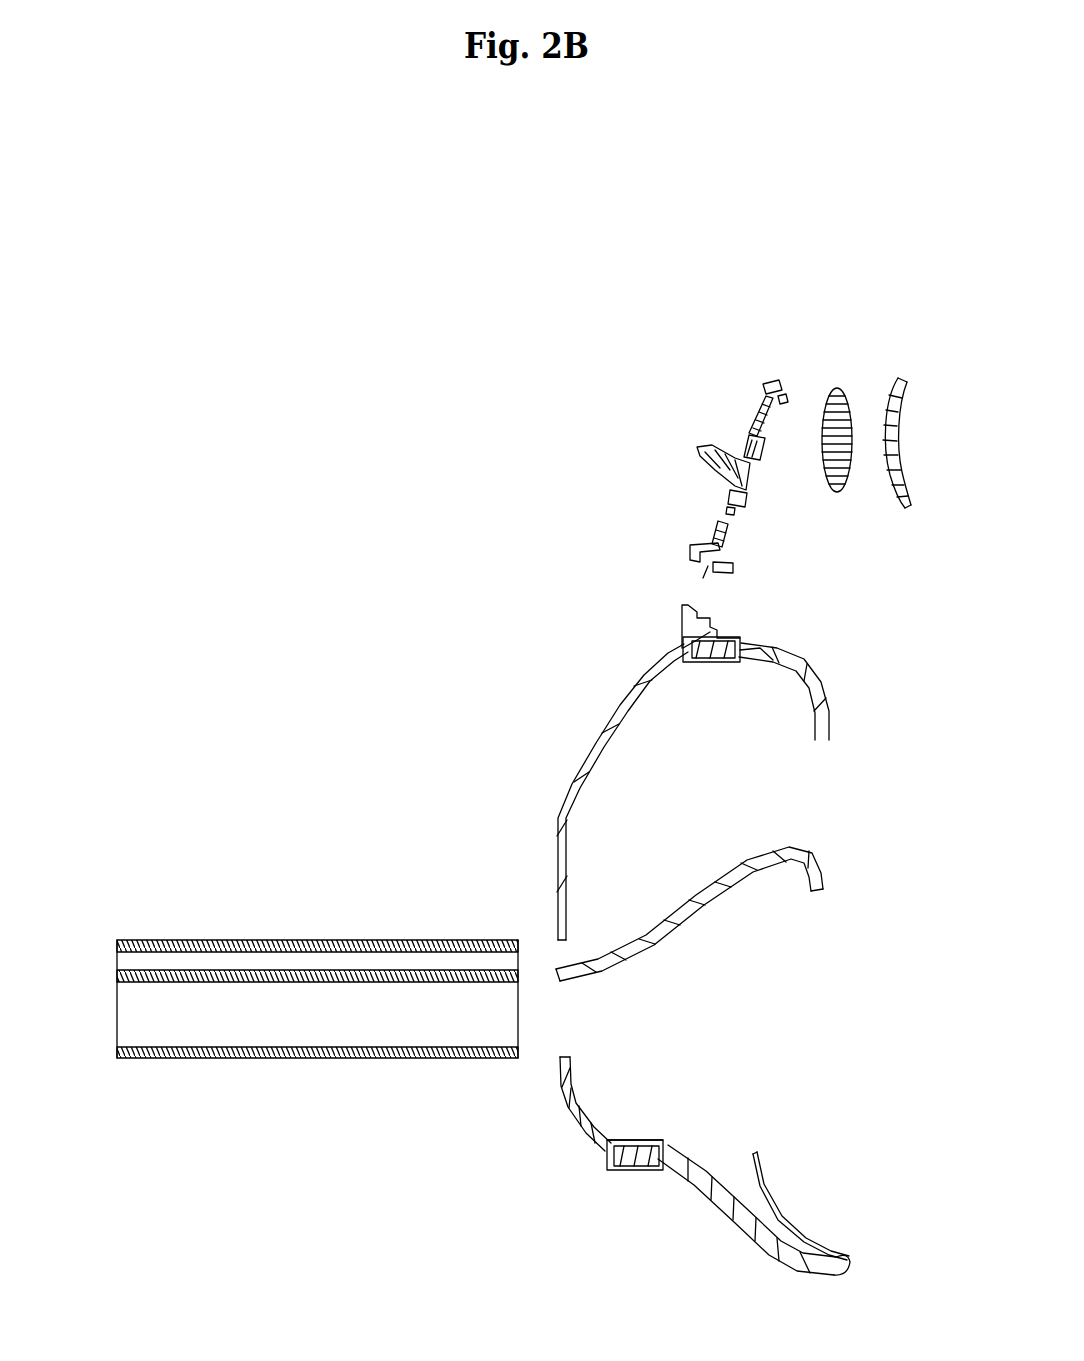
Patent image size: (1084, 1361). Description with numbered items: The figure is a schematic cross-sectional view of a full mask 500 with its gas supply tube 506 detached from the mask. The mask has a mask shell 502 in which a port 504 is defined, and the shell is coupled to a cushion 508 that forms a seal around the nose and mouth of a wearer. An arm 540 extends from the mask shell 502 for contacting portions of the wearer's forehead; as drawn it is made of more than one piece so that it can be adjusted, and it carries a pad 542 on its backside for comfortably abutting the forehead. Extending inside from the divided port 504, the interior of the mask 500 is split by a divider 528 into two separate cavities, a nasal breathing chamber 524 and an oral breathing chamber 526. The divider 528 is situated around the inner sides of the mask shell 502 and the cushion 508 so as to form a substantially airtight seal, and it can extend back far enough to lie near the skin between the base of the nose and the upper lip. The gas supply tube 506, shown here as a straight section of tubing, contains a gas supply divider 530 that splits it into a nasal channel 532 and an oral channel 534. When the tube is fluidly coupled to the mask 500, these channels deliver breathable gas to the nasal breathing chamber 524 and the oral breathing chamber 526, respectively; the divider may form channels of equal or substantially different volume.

The full mask 500 is at (837, 296).
The mask shell 502 is at (598, 748).
The port 504 is at (590, 1049).
The gas supply tube 506 is at (267, 930).
The cushion 508 is at (757, 645).
The nasal breathing chamber 524 is at (713, 822).
The oral breathing chamber 526 is at (718, 1079).
The divider 528 is at (707, 897).
The gas supply divider 530 is at (414, 976).
The nasal channel 532 is at (88, 946).
The oral channel 534 is at (130, 1018).
The arm 540 is at (750, 423).
The pad 542 is at (900, 478).